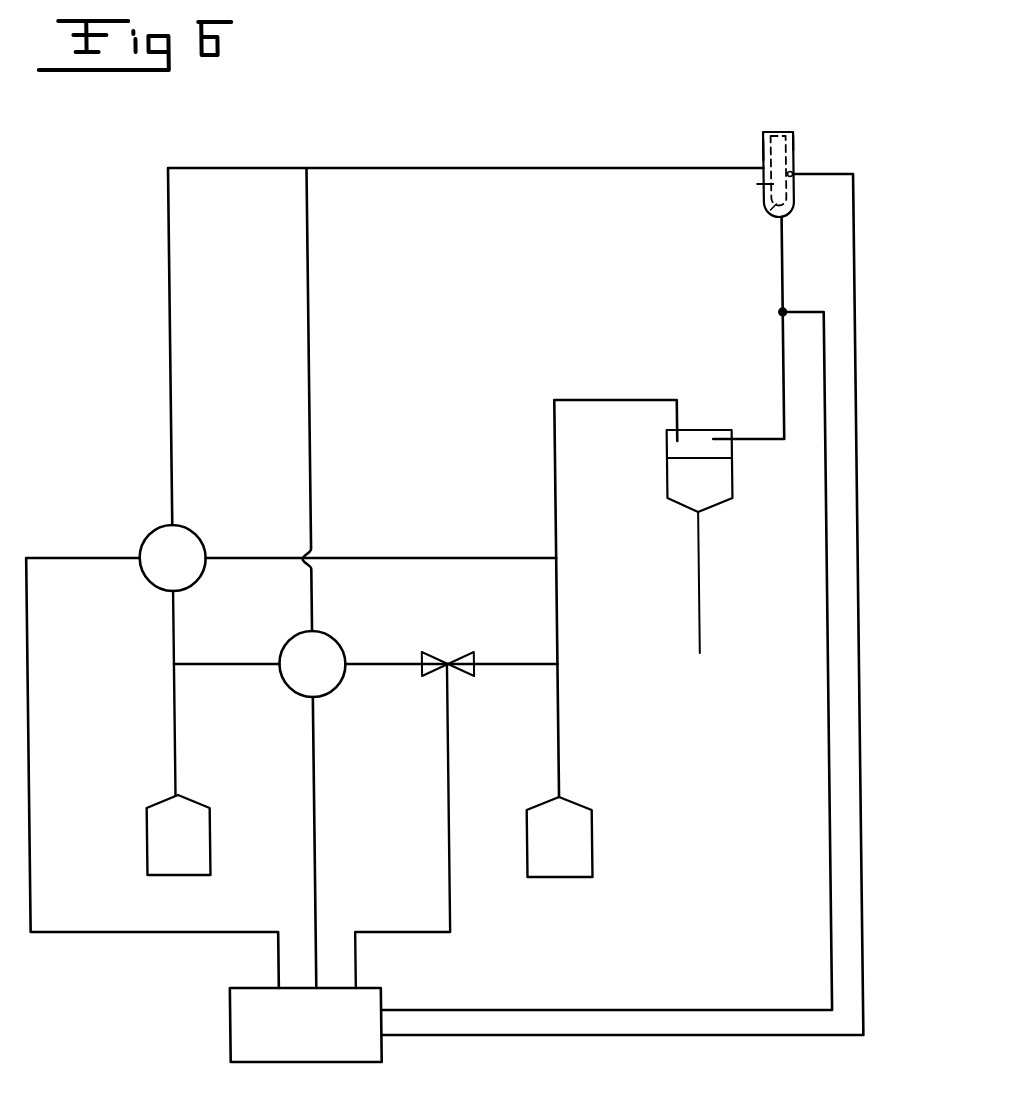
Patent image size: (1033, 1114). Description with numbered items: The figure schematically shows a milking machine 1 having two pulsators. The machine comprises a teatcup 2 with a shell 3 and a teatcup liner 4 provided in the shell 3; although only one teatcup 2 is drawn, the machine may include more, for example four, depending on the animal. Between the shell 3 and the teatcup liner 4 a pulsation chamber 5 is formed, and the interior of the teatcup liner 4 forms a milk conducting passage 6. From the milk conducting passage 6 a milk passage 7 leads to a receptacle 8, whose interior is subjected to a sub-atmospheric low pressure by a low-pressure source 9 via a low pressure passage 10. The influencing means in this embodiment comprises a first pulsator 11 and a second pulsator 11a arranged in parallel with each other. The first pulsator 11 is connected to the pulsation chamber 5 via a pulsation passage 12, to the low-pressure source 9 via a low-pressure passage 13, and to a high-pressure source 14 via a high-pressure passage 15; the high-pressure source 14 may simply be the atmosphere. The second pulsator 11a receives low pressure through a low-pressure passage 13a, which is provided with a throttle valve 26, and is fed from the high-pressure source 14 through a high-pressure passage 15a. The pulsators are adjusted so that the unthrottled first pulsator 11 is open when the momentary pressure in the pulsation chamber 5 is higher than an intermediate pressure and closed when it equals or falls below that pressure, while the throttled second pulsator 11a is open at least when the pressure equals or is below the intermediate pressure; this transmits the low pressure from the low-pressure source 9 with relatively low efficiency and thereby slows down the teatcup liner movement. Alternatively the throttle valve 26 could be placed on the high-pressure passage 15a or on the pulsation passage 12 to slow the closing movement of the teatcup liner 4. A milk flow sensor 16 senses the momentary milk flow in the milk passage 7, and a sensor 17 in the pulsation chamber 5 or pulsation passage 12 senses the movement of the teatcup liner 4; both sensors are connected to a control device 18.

The milking machine 1 is at (488, 136).
The teatcup 2 is at (780, 132).
The shell 3 is at (794, 141).
The teatcup liner 4 is at (757, 184).
The pulsation chamber 5 is at (765, 148).
The milk conducting passage 6 is at (772, 206).
The milk passage 7 is at (781, 373).
The receptacle 8 is at (703, 474).
The low-pressure source 9 is at (575, 814).
The low pressure passage 10 is at (552, 496).
The first pulsator 11 is at (180, 548).
The second pulsator 11a is at (293, 677).
The pulsation passage 12 is at (521, 167).
The low-pressure passage 13 is at (473, 558).
The low-pressure passage 13a is at (380, 660).
The high-pressure source 14 is at (162, 845).
The high-pressure passage 15 is at (170, 690).
The high-pressure passage 15a is at (193, 664).
The milk flow sensor 16 is at (781, 312).
The sensor 17 is at (792, 174).
The control device 18 is at (360, 1050).
The throttle valve 26 is at (462, 658).